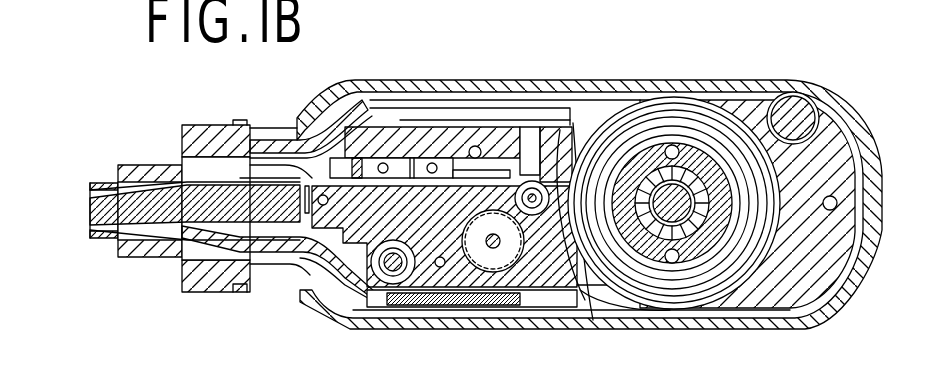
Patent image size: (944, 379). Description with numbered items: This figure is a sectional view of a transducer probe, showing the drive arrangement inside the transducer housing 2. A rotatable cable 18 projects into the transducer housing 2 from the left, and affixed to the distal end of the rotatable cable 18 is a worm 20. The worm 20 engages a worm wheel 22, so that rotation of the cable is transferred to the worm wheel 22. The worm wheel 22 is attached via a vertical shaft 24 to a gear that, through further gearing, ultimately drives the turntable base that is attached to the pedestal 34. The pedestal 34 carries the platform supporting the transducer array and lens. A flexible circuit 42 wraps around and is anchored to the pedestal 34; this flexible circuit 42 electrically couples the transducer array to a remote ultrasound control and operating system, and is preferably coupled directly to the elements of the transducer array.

The transducer housing 2 is at (360, 80).
The rotatable cable 18 is at (108, 203).
The worm 20 is at (490, 236).
The worm wheel 22 is at (556, 170).
The vertical shaft 24 is at (531, 192).
The pedestal 34 is at (700, 160).
The flexible circuit 42 is at (586, 290).